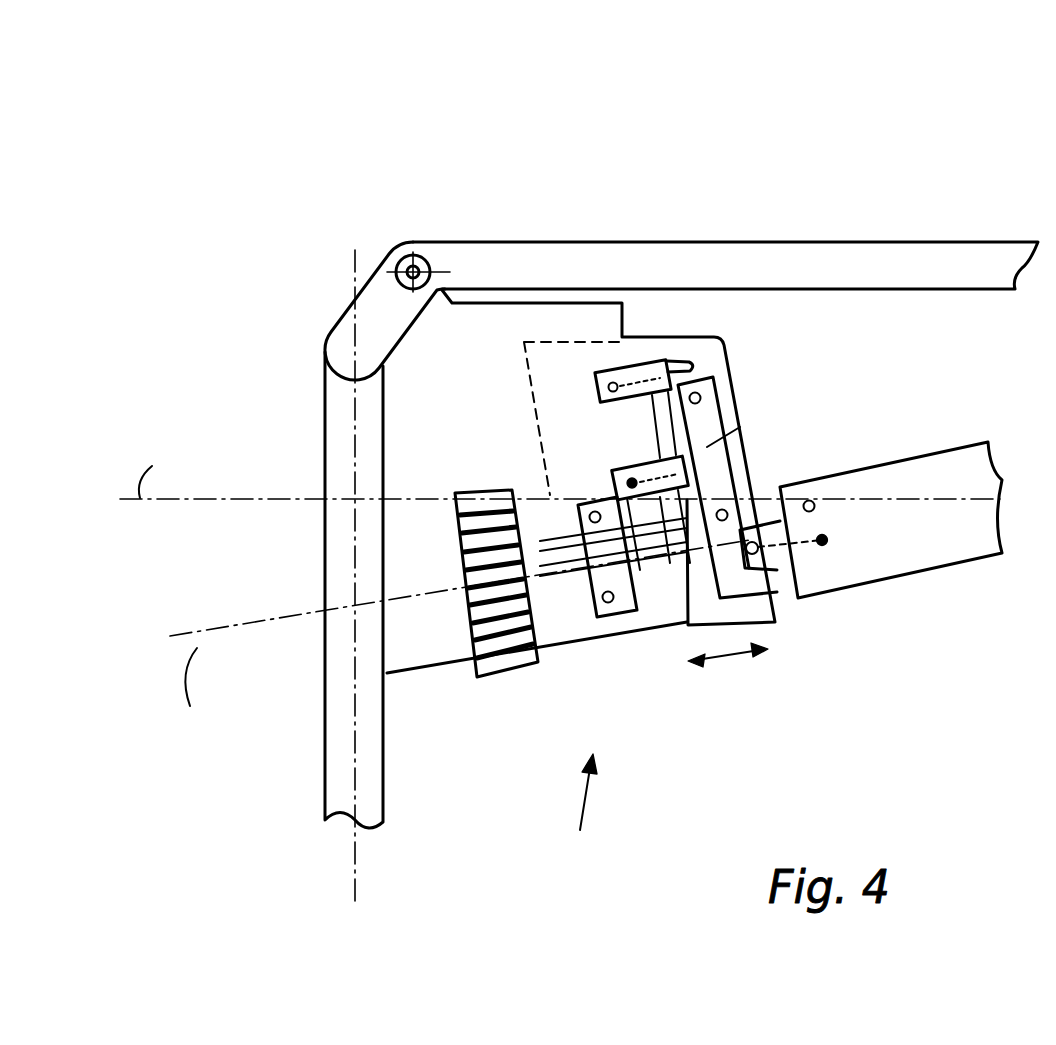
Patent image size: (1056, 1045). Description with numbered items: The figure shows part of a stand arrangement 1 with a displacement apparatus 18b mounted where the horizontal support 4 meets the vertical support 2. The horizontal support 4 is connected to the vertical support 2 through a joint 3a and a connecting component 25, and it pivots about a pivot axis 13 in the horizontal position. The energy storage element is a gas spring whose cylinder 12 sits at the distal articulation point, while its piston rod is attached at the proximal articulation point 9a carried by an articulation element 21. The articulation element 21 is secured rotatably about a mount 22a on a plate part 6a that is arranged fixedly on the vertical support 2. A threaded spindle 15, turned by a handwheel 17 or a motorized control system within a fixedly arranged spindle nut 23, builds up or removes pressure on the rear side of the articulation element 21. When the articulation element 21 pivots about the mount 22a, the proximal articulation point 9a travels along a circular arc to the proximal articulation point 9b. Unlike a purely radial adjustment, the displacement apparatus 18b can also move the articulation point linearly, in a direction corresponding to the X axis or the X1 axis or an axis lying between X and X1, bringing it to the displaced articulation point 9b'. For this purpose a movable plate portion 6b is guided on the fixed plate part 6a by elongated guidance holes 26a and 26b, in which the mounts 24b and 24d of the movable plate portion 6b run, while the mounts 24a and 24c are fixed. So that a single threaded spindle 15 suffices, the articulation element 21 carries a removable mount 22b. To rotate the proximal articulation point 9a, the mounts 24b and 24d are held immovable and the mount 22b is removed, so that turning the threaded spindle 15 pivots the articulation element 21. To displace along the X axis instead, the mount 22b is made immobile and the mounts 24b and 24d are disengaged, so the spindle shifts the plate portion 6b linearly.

The stand arrangement 1 is at (216, 130).
The vertical support 2 is at (332, 580).
The joint 3a is at (402, 258).
The horizontal support 4 is at (677, 257).
The plate part 6a is at (470, 429).
The plate portion 6b is at (707, 357).
The proximal articulation point 9a is at (770, 578).
The proximal articulation point 9b is at (862, 447).
The displaced proximal articulation point 9b' is at (848, 612).
The cylinder 12 is at (940, 548).
The pivot axis 13 is at (360, 884).
The threaded spindle 15 is at (553, 600).
The handwheel 17 is at (492, 625).
The displacement apparatus 18b is at (580, 822).
The articulation element 21 is at (707, 447).
The mount 22a is at (701, 396).
The removable mount 22b is at (740, 498).
The spindle nut 23 is at (620, 627).
The mount 24a is at (620, 372).
The mount 24b is at (650, 395).
The mount 24c is at (662, 575).
The mount 24d is at (708, 590).
The connecting component 25 is at (340, 320).
The elongated guidance hole 26a is at (680, 365).
The elongated guidance hole 26b is at (648, 466).
The X axis X is at (447, 652).
The X1 axis X1 is at (560, 441).